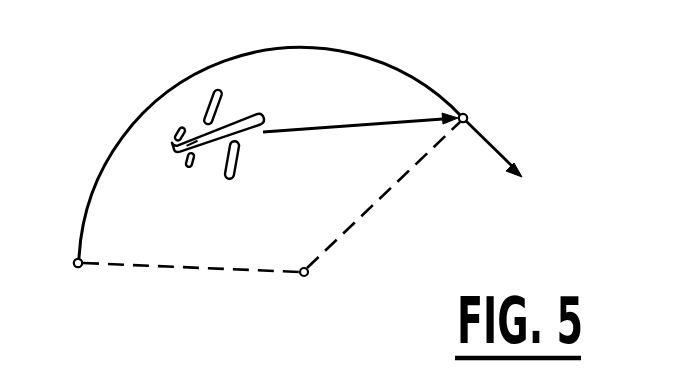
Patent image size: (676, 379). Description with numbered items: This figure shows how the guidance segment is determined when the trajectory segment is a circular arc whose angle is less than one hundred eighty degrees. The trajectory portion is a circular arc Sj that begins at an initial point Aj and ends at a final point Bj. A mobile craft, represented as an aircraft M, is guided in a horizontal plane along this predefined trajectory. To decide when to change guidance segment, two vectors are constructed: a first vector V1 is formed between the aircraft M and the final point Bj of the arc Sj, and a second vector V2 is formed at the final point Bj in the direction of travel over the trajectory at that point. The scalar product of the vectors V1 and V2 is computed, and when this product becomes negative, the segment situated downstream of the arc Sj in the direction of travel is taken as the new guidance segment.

The circular arc segment Sj is at (145, 108).
The initial point Aj is at (59, 265).
The final point Bj is at (477, 104).
The aircraft M is at (207, 158).
The first vector V1 is at (345, 88).
The second vector V2 is at (548, 135).